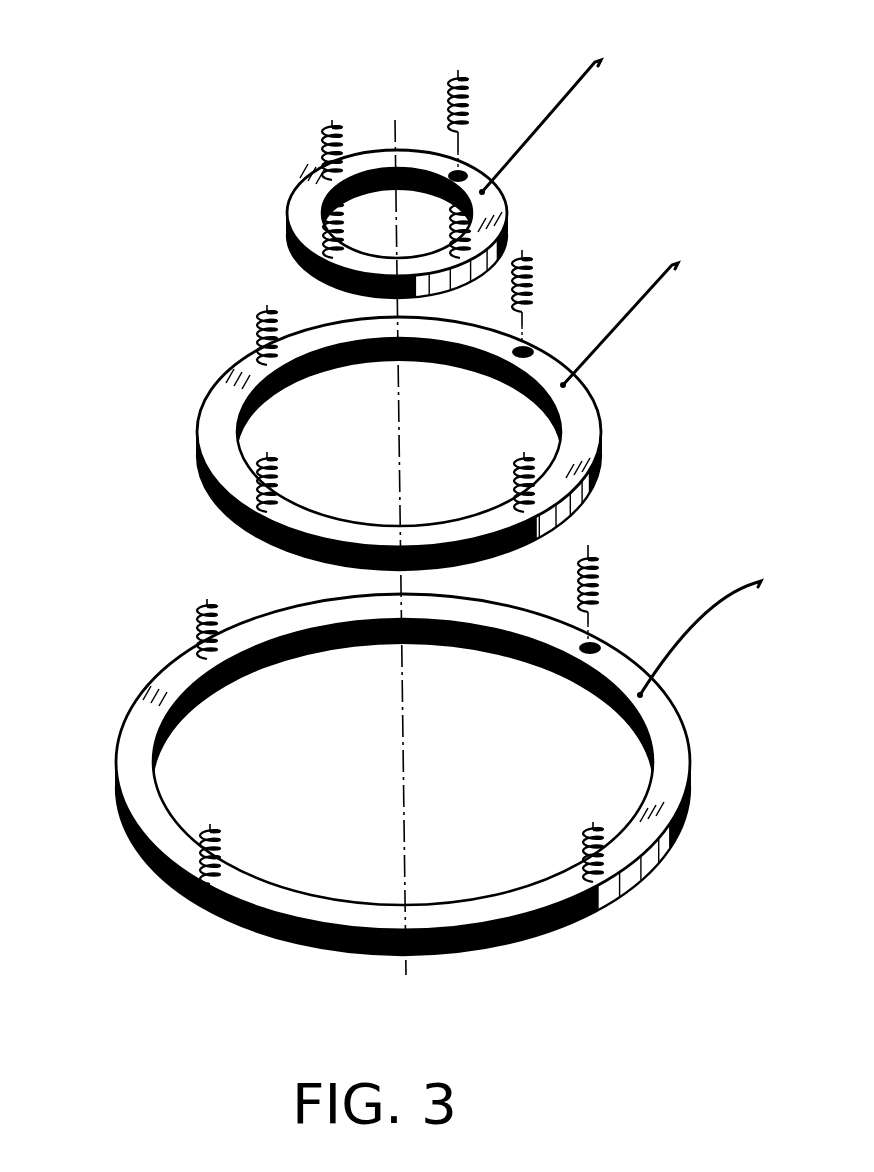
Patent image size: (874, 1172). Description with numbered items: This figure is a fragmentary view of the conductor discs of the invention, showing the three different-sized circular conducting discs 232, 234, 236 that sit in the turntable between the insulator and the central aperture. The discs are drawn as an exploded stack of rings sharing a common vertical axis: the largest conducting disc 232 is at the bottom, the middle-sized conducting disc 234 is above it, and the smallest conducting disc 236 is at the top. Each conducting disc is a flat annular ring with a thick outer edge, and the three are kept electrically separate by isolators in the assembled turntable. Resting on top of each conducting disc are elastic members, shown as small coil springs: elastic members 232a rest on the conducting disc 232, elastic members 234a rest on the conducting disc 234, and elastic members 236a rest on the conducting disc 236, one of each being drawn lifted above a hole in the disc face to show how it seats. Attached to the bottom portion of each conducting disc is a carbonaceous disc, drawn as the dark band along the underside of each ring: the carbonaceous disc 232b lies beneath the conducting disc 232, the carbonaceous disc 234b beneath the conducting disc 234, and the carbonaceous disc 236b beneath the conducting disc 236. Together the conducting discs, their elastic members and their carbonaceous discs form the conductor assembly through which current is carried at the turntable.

The conducting disc 232 is at (137, 804).
The elastic member 232a is at (598, 585).
The carbonaceous disc 232b is at (133, 846).
The conducting disc 234 is at (218, 462).
The elastic member 234a is at (533, 283).
The carbonaceous disc 234b is at (215, 500).
The conducting disc 236 is at (298, 219).
The elastic member 236a is at (468, 97).
The carbonaceous disc 236b is at (303, 268).